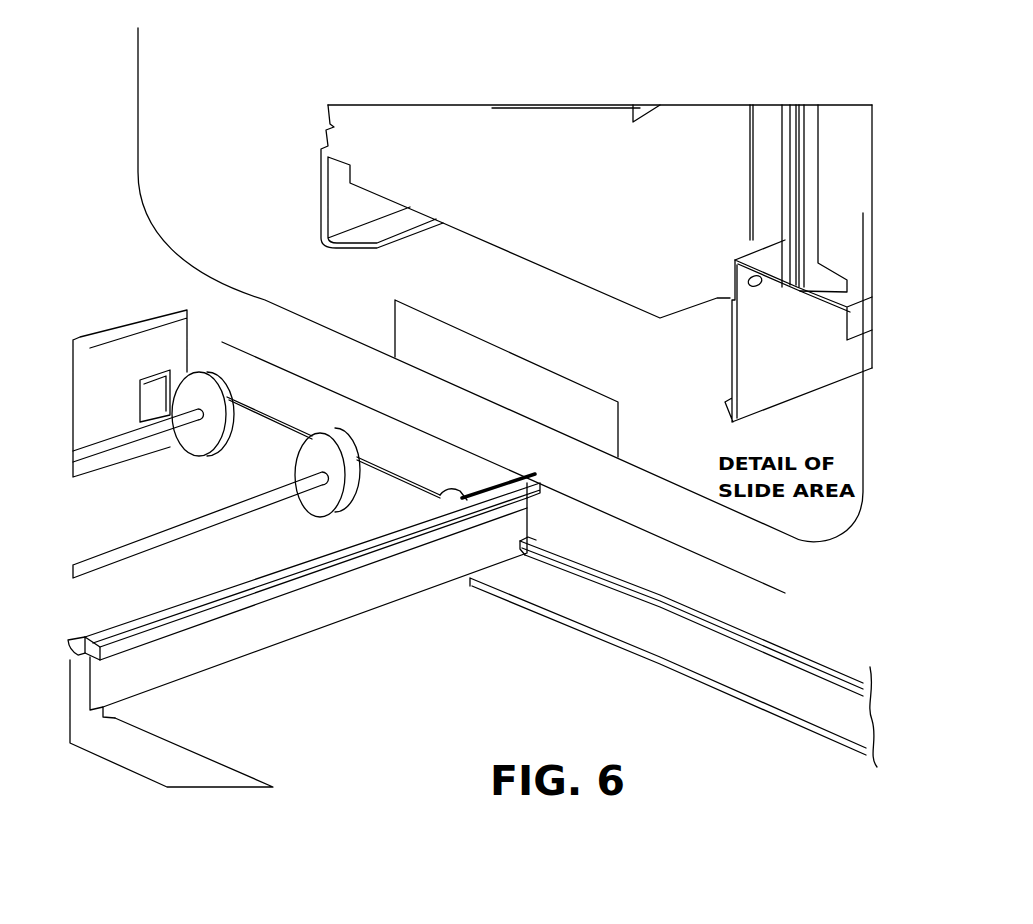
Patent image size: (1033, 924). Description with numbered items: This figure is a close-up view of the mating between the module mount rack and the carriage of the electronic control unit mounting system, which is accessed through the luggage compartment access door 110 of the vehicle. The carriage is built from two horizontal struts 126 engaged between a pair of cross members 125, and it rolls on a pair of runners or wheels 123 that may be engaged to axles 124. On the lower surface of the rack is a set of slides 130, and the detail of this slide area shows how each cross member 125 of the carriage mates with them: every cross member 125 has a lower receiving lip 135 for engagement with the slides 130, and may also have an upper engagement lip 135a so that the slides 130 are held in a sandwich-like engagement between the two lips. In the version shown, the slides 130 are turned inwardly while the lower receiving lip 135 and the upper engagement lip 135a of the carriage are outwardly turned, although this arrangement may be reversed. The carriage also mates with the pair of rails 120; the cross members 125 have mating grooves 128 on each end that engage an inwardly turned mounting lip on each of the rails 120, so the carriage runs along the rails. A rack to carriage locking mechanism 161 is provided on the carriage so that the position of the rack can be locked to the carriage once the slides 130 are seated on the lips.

The luggage compartment access door 110 is at (832, 534).
The rails 120 is at (257, 780).
The wheels 123 is at (223, 381).
The axles 124 is at (228, 507).
The cross members 125 is at (138, 324).
The horizontal struts 126 is at (405, 470).
The mating grooves 128 is at (538, 530).
The slides 130 is at (366, 251).
The lower receiving lip 135 is at (545, 490).
The upper engagement lip 135a is at (527, 470).
The rack to carriage locking mechanism 161 is at (125, 655).